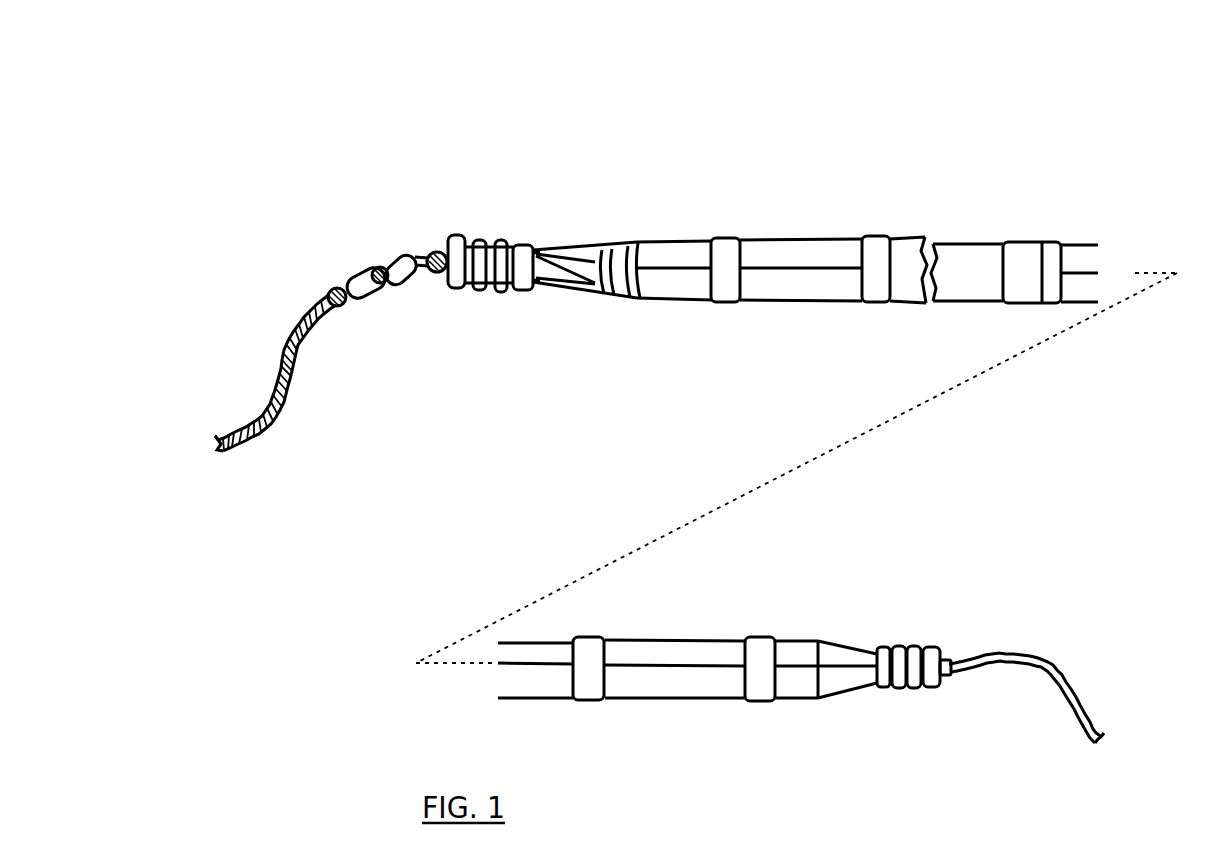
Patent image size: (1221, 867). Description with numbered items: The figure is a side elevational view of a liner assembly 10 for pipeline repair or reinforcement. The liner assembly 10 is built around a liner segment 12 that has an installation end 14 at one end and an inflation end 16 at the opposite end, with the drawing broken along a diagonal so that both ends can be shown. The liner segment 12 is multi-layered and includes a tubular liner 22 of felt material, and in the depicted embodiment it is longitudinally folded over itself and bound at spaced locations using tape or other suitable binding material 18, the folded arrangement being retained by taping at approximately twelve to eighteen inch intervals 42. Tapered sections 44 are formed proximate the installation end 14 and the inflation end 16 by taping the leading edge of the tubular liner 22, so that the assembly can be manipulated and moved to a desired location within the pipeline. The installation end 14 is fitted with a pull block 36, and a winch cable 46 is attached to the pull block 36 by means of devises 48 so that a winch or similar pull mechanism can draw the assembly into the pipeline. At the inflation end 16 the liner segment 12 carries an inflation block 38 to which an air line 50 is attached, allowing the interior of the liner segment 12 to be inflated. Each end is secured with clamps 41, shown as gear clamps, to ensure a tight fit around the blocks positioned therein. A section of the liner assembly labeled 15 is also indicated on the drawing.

The liner assembly 10 is at (631, 160).
The liner segment 12 is at (687, 208).
The installation end 14 is at (461, 205).
The pole extension section 15 is at (969, 236).
The inflation end 16 is at (892, 612).
The binding material 18 is at (731, 243).
The tubular liner 22 is at (833, 258).
The pull block 36 is at (442, 288).
The inflation block 38 is at (947, 680).
The clamps 41 is at (476, 240).
The intervals 42 is at (723, 302).
The tapered sections 44 is at (602, 292).
The winch cable 46 is at (294, 386).
The devises 48 is at (382, 262).
The air line 50 is at (1038, 658).